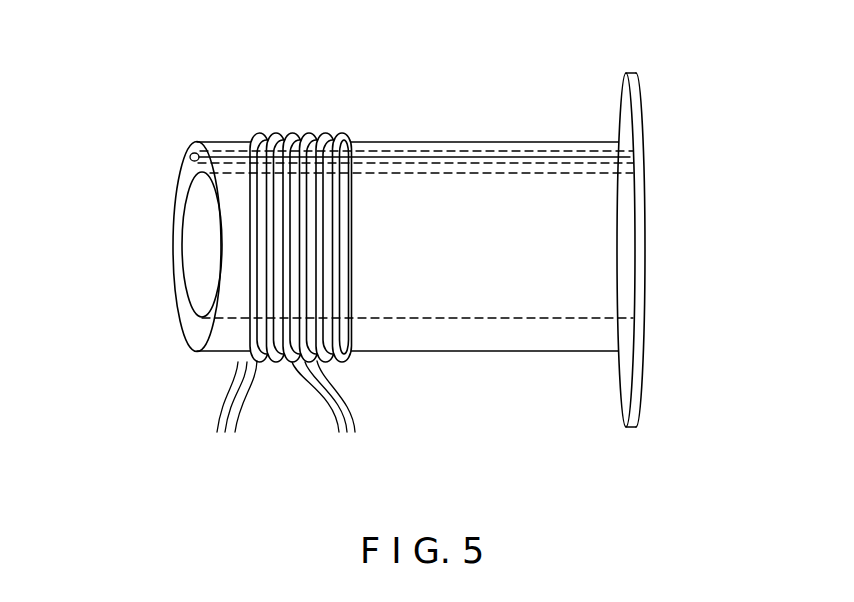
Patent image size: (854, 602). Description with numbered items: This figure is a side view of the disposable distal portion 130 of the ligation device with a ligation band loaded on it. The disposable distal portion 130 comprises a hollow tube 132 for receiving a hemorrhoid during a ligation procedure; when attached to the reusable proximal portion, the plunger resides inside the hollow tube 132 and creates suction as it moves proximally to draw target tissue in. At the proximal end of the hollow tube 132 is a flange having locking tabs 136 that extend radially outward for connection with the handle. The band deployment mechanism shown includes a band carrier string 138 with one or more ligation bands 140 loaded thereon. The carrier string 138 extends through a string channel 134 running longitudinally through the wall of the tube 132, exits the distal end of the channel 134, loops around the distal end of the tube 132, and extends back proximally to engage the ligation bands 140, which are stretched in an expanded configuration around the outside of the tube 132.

The disposable distal portion 130 is at (398, 251).
The hollow tube 132 is at (192, 334).
The string channel 134 is at (213, 152).
The locking tabs 136 is at (652, 84).
The band carrier string 138 is at (297, 152).
The ligation band 140 is at (286, 411).